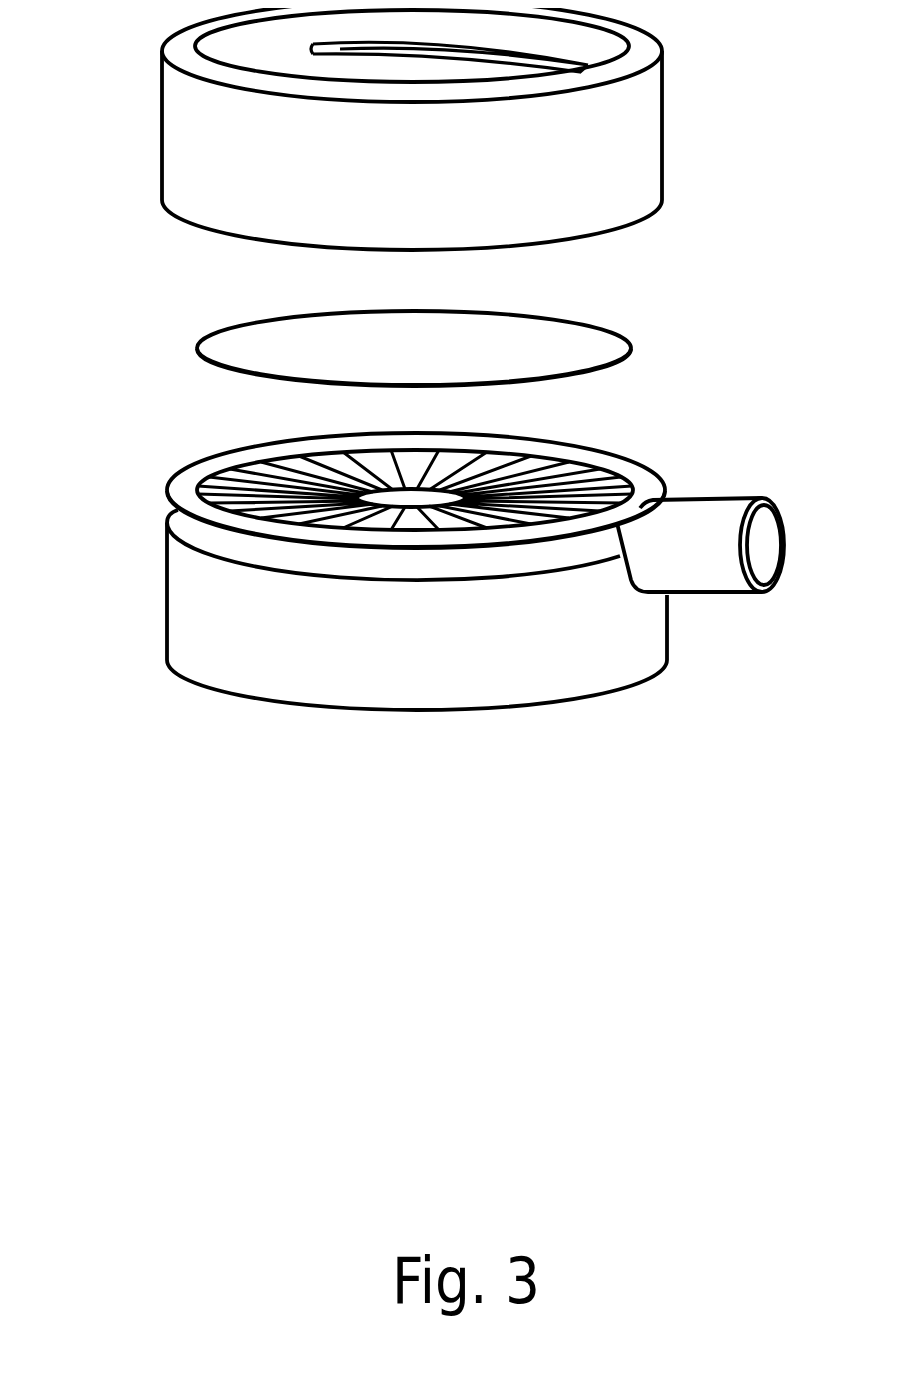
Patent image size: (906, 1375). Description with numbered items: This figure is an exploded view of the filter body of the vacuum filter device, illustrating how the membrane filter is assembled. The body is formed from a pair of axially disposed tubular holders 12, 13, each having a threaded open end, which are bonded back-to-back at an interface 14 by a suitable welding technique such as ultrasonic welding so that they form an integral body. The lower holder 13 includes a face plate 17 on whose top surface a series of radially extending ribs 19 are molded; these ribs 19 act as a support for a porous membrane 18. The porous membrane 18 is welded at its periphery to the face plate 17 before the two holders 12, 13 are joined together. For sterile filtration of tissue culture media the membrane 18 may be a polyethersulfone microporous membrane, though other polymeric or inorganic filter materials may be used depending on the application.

The tubular holder 12 is at (182, 119).
The tubular holder 13 is at (207, 600).
The interface 14 is at (366, 469).
The face plate 17 is at (310, 468).
The porous membrane 18 is at (235, 348).
The radially extending ribs 19 is at (590, 487).